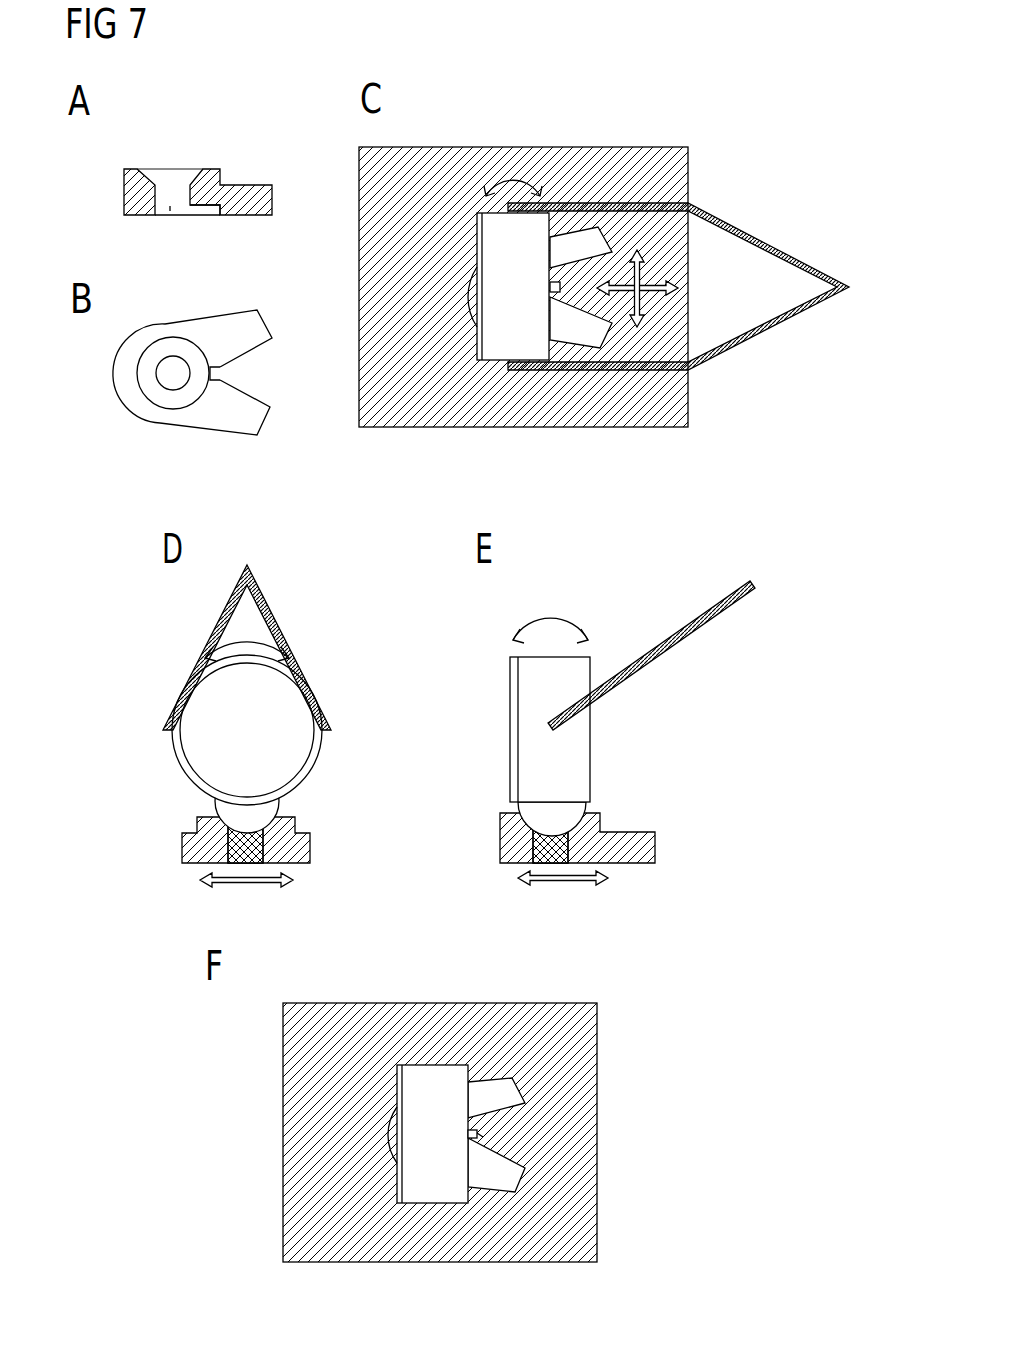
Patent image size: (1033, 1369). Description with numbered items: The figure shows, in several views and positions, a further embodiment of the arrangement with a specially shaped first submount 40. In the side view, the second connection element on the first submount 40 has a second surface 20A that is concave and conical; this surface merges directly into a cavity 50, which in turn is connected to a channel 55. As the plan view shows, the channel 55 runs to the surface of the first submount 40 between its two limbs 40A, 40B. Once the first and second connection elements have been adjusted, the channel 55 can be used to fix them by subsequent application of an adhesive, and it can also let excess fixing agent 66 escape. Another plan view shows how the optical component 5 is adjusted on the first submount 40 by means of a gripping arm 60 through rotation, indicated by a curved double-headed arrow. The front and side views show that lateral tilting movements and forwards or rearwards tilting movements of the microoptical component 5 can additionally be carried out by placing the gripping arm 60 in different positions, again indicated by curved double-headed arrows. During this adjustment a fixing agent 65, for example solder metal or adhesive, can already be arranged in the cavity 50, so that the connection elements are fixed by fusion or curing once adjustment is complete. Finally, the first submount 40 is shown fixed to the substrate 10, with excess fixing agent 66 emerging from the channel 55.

The optical component 5 is at (497, 350).
The substrate 10 is at (688, 172).
The second surface 20A is at (147, 168).
The first submount 40 is at (123, 187).
The limb 40A is at (263, 422).
The limb 40B is at (263, 322).
The cavity 50 is at (170, 217).
The channel 55 is at (205, 216).
The gripping arm 60 is at (753, 237).
The fixing agent 65 is at (244, 840).
The excess fixing agent 66 is at (483, 1137).